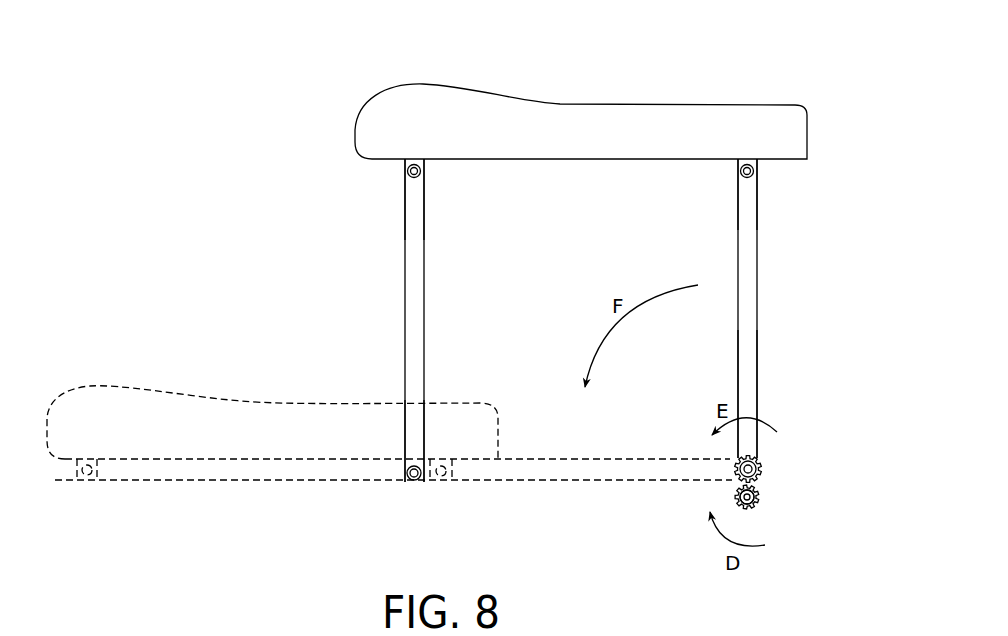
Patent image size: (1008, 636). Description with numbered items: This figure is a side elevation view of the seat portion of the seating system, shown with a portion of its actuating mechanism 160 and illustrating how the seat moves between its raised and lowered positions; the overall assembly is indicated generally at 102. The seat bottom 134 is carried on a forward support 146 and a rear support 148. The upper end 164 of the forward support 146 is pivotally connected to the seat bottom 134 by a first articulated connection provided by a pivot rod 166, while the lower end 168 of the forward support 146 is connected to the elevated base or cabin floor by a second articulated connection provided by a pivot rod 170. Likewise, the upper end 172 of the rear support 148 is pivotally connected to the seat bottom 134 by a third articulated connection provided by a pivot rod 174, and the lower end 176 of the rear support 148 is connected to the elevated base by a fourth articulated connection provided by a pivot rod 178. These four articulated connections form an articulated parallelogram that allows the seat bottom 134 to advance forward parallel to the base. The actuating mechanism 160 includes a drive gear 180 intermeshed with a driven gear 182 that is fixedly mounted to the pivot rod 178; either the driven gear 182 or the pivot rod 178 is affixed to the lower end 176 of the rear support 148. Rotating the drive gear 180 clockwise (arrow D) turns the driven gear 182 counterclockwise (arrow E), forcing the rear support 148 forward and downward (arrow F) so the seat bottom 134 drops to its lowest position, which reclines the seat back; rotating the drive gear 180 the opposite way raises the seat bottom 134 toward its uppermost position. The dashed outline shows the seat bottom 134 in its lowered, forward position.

The seat assembly 102 is at (347, 70).
The seat bottom 134 is at (558, 104).
The forward support 146 is at (405, 302).
The upper end of forward support 164 is at (405, 200).
The pivot rod 166 is at (420, 172).
The lower end of forward support 168 is at (403, 437).
The pivot rod 170 is at (415, 480).
The rear support 148 is at (758, 275).
The upper end of rear support 172 is at (758, 203).
The pivot rod 174 is at (741, 173).
The lower end of rear support 176 is at (758, 357).
The pivot rod 178 is at (753, 460).
The driven gear 182 is at (760, 467).
The drive gear 180 is at (760, 502).
The actuating mechanism 160 is at (768, 520).